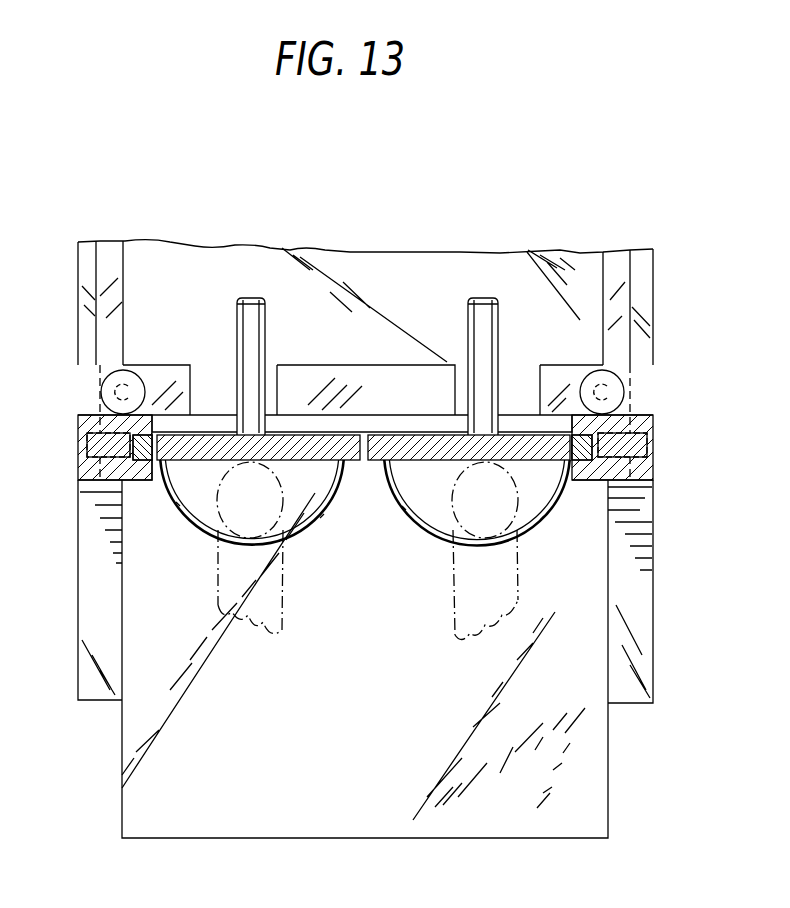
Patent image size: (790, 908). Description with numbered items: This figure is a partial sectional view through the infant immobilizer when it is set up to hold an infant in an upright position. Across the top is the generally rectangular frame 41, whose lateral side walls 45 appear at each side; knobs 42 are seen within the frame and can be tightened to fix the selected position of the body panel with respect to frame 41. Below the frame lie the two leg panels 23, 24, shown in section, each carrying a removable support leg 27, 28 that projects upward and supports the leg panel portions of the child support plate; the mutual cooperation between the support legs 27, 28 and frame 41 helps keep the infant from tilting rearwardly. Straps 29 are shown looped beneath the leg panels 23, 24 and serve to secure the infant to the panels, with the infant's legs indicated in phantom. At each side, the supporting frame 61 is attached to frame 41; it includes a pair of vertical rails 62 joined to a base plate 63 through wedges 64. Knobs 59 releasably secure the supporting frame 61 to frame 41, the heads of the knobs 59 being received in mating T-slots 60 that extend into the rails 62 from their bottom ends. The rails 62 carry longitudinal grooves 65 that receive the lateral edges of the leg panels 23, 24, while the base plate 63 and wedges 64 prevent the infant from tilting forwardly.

The frame 41 is at (655, 325).
The lateral side walls 45 is at (78, 313).
The knobs 42 is at (112, 388).
The removable support leg 27 is at (265, 303).
The removable support leg 28 is at (498, 303).
The vertical rails 62 is at (83, 422).
The knobs 59 is at (80, 447).
The longitudinal grooves 65 is at (143, 464).
The supporting frame 61 is at (653, 460).
The T-slots 60 is at (85, 492).
The leg panel 23 is at (312, 462).
The leg panel 24 is at (410, 462).
The straps 29 is at (295, 538).
The wedges 64 is at (85, 609).
The base plate 63 is at (378, 777).